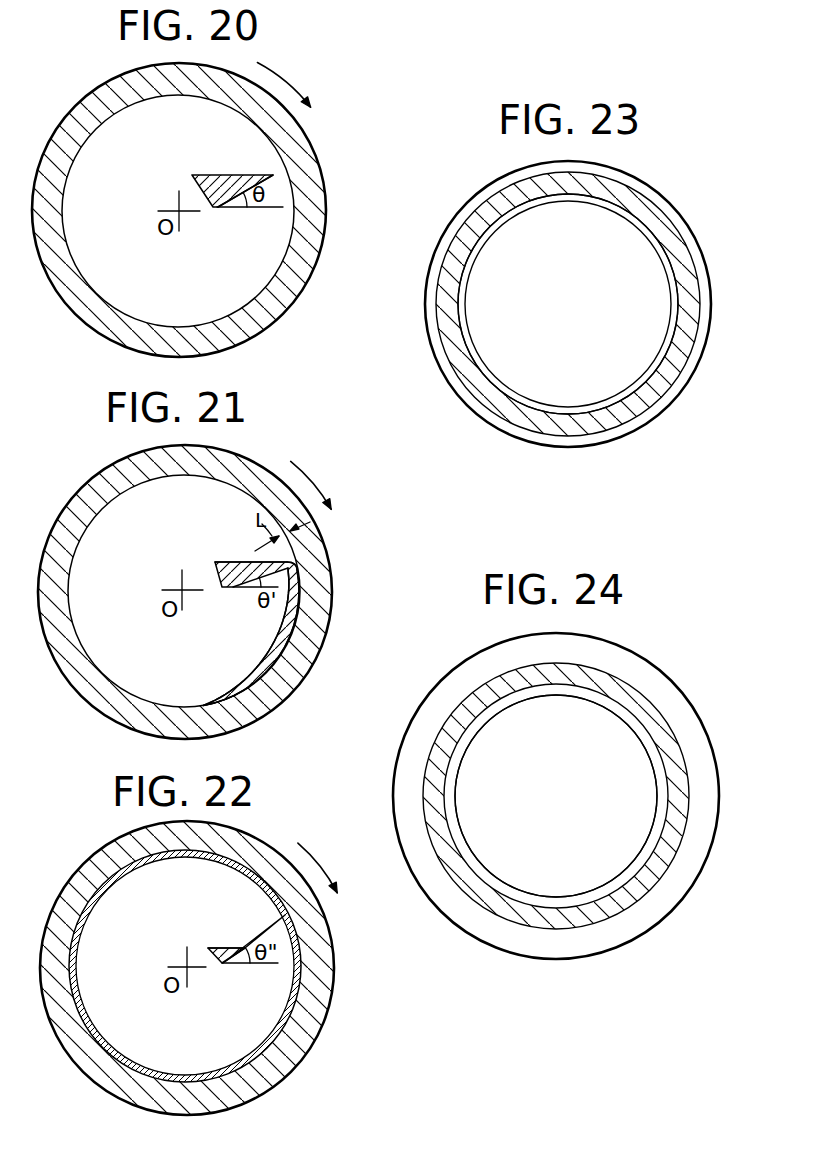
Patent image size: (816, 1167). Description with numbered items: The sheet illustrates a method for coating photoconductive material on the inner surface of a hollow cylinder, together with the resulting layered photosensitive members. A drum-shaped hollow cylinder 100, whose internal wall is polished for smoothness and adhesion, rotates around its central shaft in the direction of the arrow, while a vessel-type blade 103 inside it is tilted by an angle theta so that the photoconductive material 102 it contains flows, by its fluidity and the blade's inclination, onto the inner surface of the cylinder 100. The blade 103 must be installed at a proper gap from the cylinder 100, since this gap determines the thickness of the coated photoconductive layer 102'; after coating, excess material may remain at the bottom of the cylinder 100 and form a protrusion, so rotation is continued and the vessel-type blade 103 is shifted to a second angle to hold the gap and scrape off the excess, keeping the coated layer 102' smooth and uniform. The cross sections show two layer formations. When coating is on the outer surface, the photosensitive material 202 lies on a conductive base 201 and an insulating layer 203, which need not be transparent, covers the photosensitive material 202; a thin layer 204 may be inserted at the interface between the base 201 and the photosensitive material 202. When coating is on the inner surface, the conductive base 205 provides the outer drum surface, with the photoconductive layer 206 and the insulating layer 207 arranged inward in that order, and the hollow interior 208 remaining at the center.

In FIG. 20, the hollow cylinder 100 is at (302, 258).
In FIG. 21, the hollow cylinder 100 is at (310, 624).
In FIG. 22, the hollow cylinder 100 is at (322, 1005).
In FIG. 20, the photoconductive material 102 is at (232, 171).
In FIG. 21, the photoconductive material 102 is at (251, 633).
In FIG. 22, the photoconductive material 102 is at (221, 975).
In FIG. 21, the coated photoconductive layer 102' is at (295, 633).
In FIG. 22, the coated photoconductive layer 102' is at (239, 966).
In FIG. 20, the vessel-type blade 103 is at (275, 167).
In FIG. 21, the vessel-type blade 103 is at (212, 557).
In FIG. 22, the vessel-type blade 103 is at (208, 947).
In FIG. 23, the conductive base 201 is at (610, 217).
In FIG. 23, the photosensitive material 202 is at (662, 238).
In FIG. 23, the insulating layer 203 is at (700, 256).
In FIG. 23, the intermediate layer 204 is at (640, 215).
In FIG. 24, the conductive base 205 is at (642, 675).
In FIG. 24, the photoconductive layer 206 is at (652, 720).
In FIG. 24, the insulating layer 207 is at (657, 760).
In FIG. 24, the hollow interior 208 is at (633, 842).